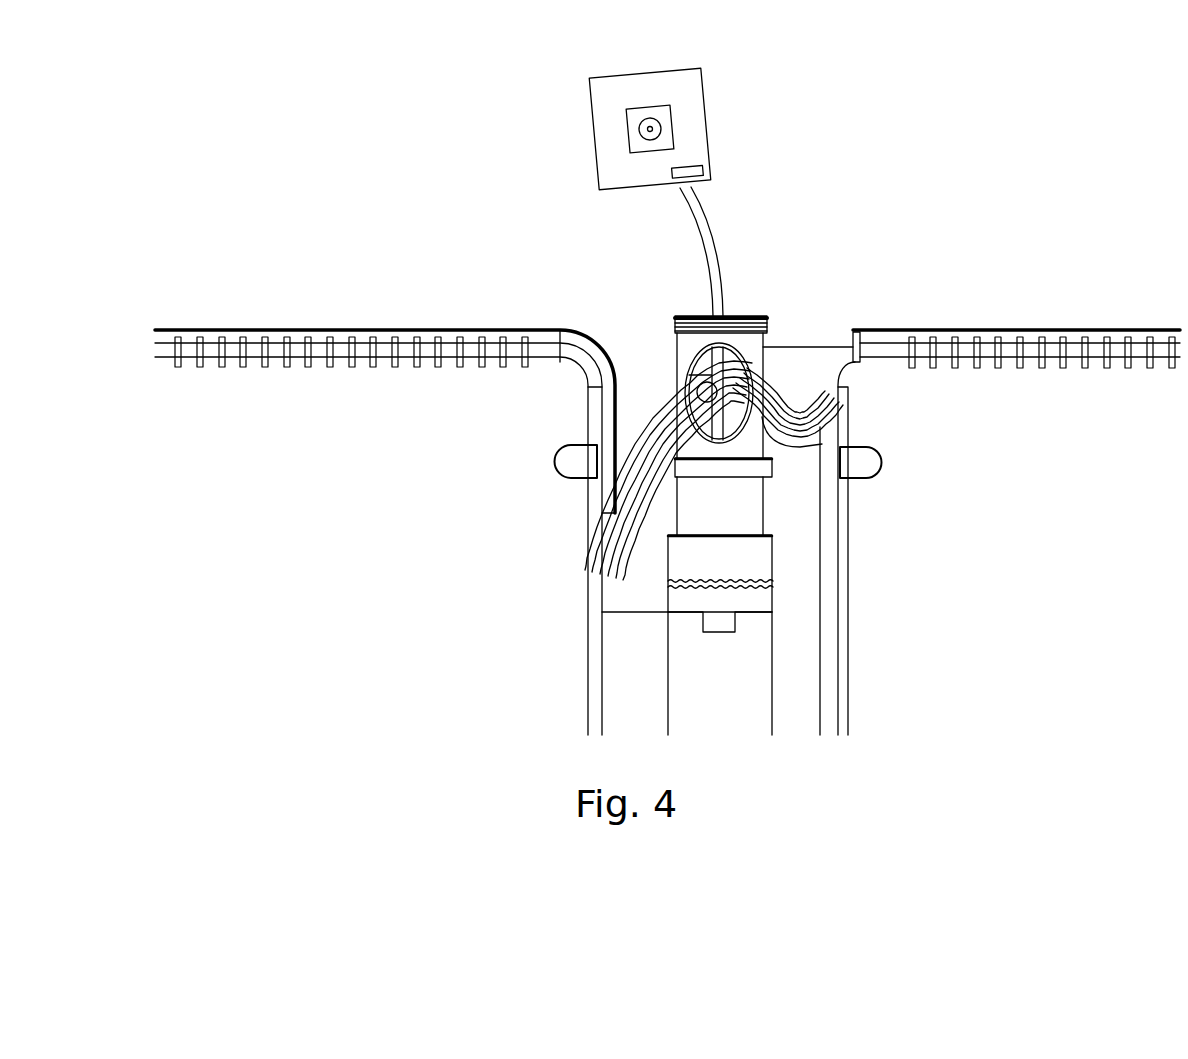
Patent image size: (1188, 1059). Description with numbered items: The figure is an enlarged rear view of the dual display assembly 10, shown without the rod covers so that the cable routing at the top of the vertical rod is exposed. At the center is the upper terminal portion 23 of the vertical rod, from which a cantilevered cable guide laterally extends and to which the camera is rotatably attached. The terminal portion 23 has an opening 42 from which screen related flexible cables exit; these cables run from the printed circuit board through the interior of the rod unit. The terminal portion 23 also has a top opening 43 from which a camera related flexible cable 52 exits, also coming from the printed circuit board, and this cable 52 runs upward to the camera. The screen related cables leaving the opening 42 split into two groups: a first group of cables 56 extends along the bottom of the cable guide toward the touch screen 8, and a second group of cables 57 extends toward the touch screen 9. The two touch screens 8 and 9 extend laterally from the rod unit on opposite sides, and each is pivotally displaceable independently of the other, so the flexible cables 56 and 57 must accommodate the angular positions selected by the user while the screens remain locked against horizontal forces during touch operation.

The touch screen 8 is at (1030, 330).
The touch screen 9 is at (245, 405).
The dual display assembly 10 is at (740, 243).
The upper terminal portion 23 is at (697, 323).
The opening 42 is at (753, 340).
The top opening 43 is at (738, 313).
The camera related flexible cable 52 is at (405, 330).
The first group of cables 56 is at (805, 405).
The second group of cables 57 is at (657, 417).